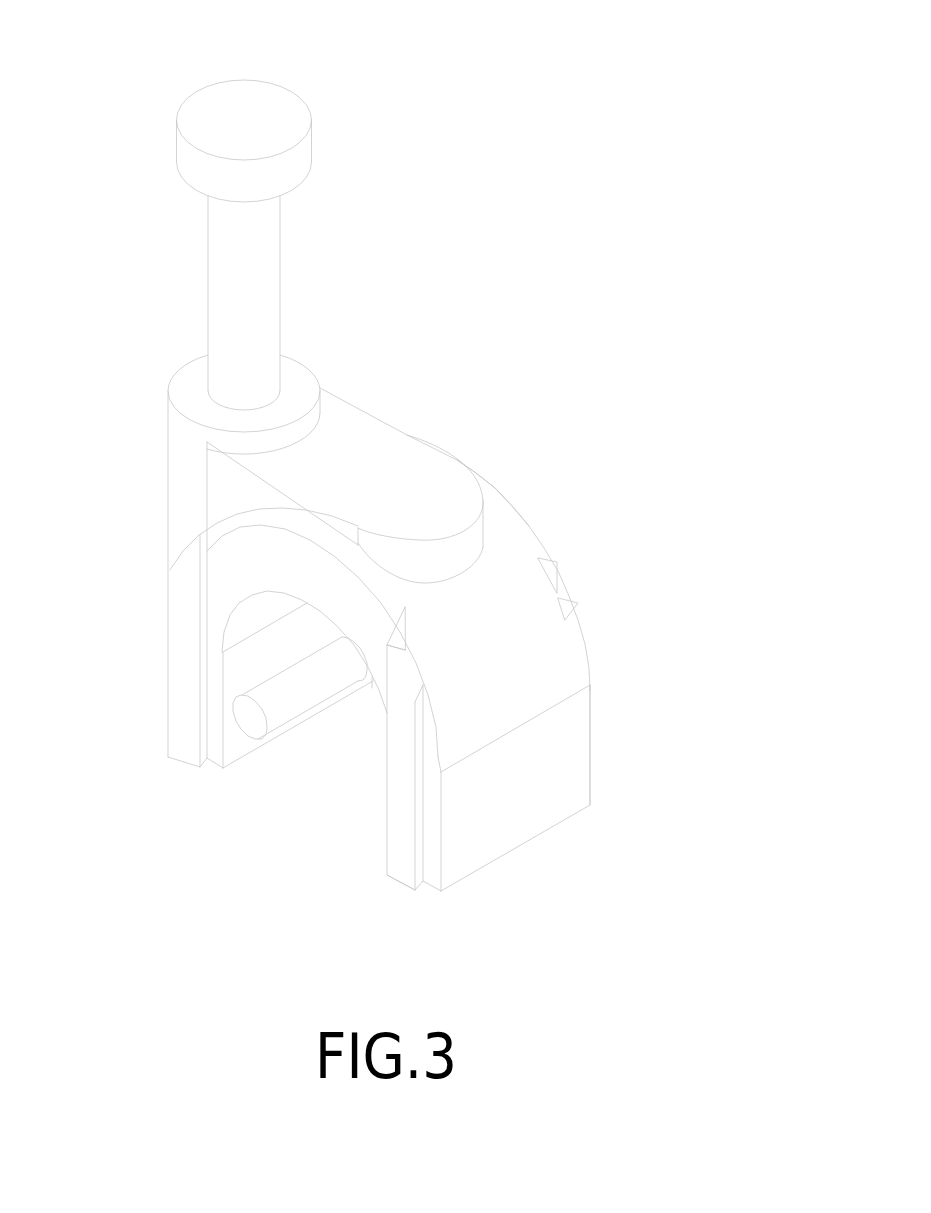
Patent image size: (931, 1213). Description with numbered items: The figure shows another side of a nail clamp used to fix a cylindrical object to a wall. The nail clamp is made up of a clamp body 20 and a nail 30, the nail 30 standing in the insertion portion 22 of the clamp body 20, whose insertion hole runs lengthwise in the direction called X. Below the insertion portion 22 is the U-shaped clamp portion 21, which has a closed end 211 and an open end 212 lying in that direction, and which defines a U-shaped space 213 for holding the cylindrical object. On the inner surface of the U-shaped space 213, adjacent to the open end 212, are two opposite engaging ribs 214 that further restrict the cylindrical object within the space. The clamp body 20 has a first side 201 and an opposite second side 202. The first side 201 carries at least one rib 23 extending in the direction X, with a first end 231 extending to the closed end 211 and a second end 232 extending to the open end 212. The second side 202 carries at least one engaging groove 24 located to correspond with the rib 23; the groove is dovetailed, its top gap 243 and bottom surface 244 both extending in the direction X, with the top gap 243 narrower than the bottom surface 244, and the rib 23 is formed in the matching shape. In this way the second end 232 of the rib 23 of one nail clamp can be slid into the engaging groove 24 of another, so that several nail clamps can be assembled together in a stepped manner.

The nail 30 is at (262, 105).
The clamp body 20 is at (467, 452).
The insertion portion 22 is at (182, 458).
The second side 202 is at (503, 492).
The first side 201 is at (248, 562).
The clamp portion 21 is at (765, 522).
The closed end 211 is at (497, 520).
The open end 212 is at (557, 826).
The engaging groove 24 is at (677, 533).
The top gap 243 is at (555, 568).
The bottom surface 244 is at (560, 598).
The rib 23 is at (182, 635).
The first end 231 is at (413, 672).
The second end 232 is at (400, 890).
The U-shaped space 213 is at (295, 755).
The engaging ribs 214 is at (250, 716).